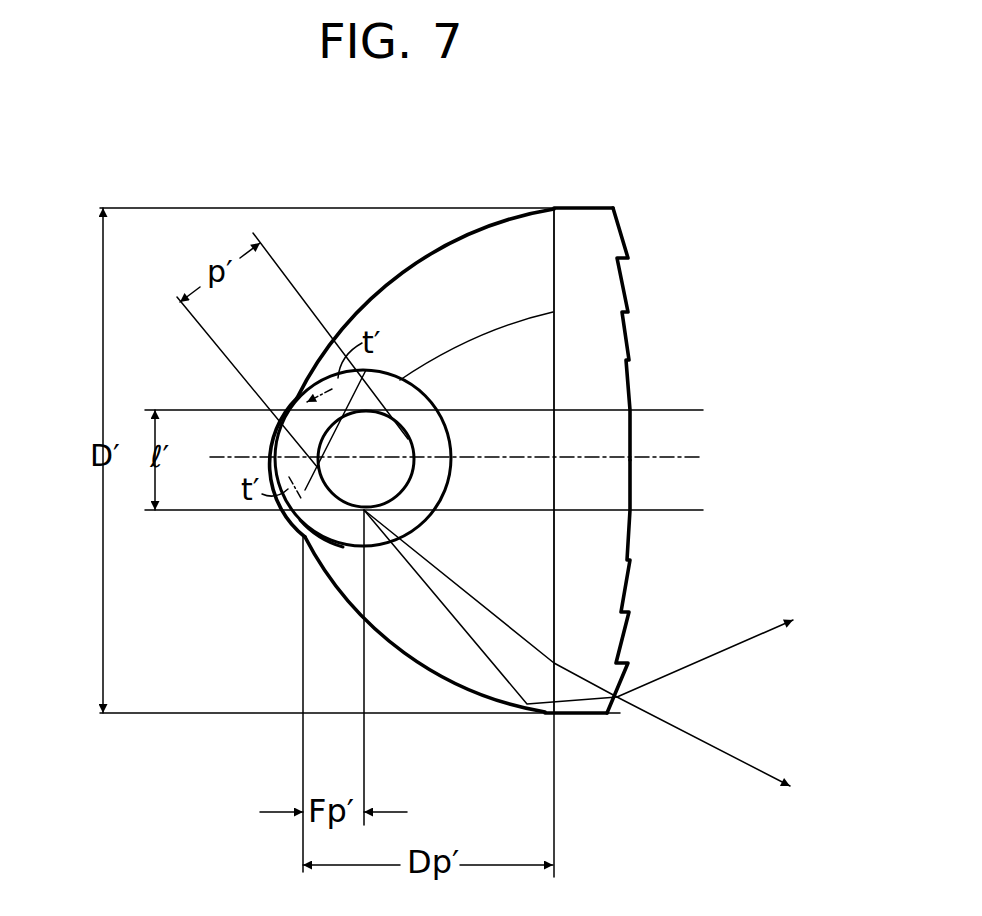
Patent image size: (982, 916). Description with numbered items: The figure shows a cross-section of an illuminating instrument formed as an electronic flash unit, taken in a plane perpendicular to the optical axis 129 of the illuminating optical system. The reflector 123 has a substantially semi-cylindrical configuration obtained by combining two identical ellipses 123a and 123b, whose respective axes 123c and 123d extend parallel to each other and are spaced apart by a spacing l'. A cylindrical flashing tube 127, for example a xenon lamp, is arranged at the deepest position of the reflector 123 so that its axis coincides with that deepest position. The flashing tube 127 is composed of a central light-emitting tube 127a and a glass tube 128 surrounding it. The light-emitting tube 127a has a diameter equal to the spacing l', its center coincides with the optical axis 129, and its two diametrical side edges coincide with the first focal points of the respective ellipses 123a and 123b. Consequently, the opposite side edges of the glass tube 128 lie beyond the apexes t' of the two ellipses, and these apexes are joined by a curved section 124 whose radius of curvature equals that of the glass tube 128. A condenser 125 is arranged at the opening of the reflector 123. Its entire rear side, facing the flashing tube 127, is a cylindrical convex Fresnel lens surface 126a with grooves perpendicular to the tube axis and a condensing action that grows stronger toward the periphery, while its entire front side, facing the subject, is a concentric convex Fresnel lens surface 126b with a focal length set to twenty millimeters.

The reflector 123 is at (368, 300).
The ellipse 123a is at (418, 262).
The ellipse 123b is at (457, 682).
The axis of ellipse 123c is at (688, 410).
The axis of ellipse 123d is at (688, 512).
The curved section 124 is at (295, 518).
The condenser 125 is at (628, 228).
The cylindrical convex Fresnel lens surface 126a is at (553, 377).
The concentric convex Fresnel lens surface 126b is at (632, 338).
The flashing tube 127 is at (311, 421).
The light-emitting tube 127a is at (411, 440).
The glass tube 128 is at (343, 547).
The optical axis 129 is at (688, 459).